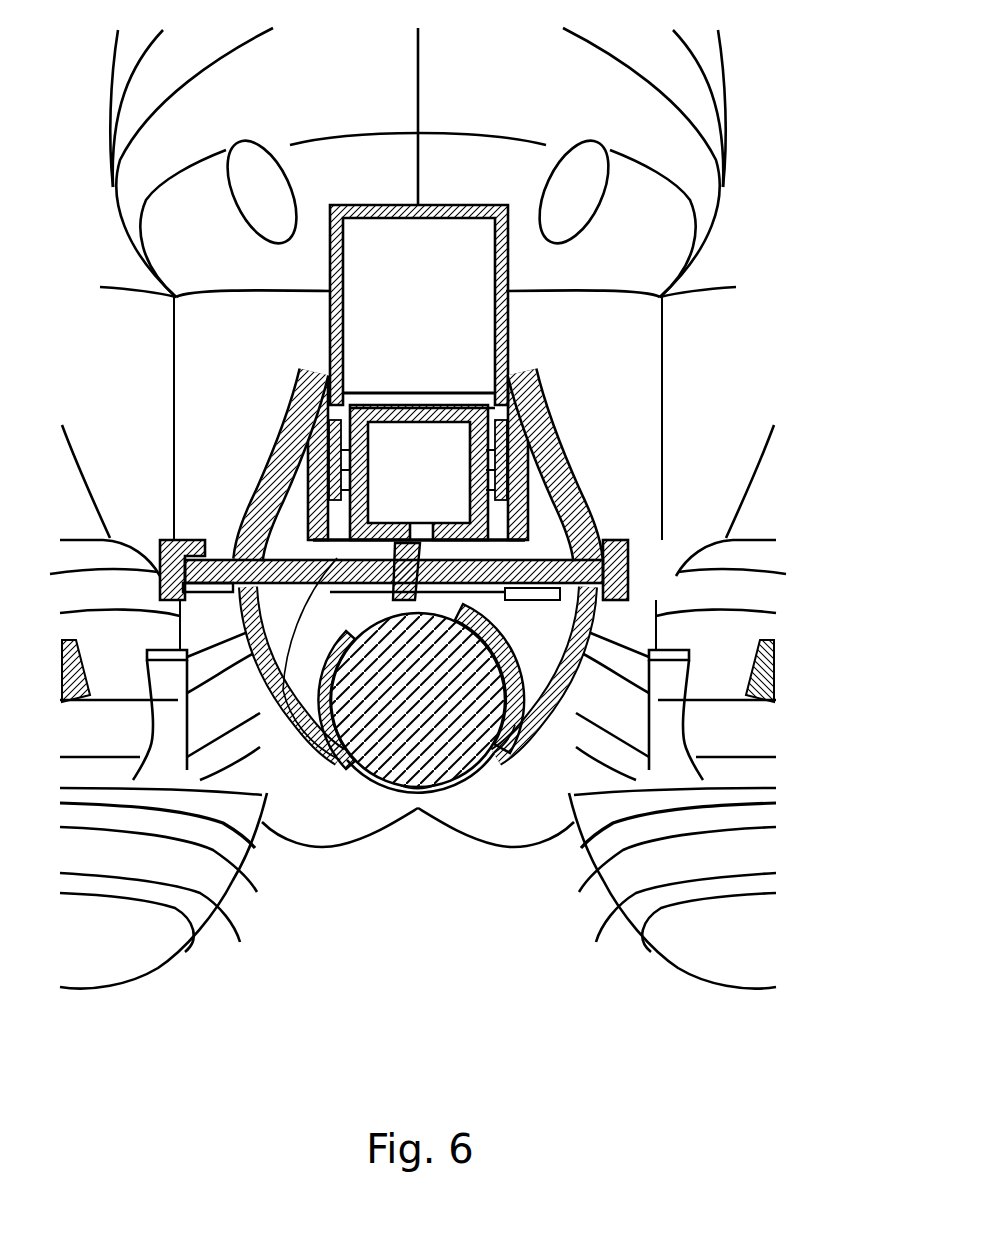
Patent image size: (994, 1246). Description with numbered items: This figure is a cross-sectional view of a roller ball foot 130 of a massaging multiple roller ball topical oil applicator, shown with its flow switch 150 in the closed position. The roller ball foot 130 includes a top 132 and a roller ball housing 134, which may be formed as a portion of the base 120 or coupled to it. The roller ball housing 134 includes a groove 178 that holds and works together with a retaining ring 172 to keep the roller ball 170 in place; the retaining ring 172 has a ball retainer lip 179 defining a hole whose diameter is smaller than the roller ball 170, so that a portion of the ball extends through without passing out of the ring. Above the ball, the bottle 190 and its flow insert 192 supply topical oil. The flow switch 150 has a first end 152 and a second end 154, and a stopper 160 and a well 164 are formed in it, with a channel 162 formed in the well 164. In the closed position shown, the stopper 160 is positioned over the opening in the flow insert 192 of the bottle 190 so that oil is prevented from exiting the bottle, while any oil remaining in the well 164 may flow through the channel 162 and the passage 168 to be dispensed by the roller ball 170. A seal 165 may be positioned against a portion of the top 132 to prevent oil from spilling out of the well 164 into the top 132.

The base 120 is at (547, 815).
The roller ball foot 130 is at (300, 470).
The top 132 is at (540, 380).
The roller ball housing 134 is at (262, 662).
The flow switch 150 is at (580, 480).
The first end 152 is at (618, 545).
The second end 154 is at (160, 575).
The stopper 160 is at (432, 782).
The channel 162 is at (306, 700).
The well 164 is at (272, 700).
The seal 165 is at (250, 548).
The passage 168 is at (378, 772).
The roller ball 170 is at (425, 548).
The retaining ring 172 is at (540, 733).
The groove 178 is at (560, 690).
The ball retainer lip 179 is at (487, 760).
The bottle 190 is at (507, 245).
The flow insert 192 is at (395, 440).